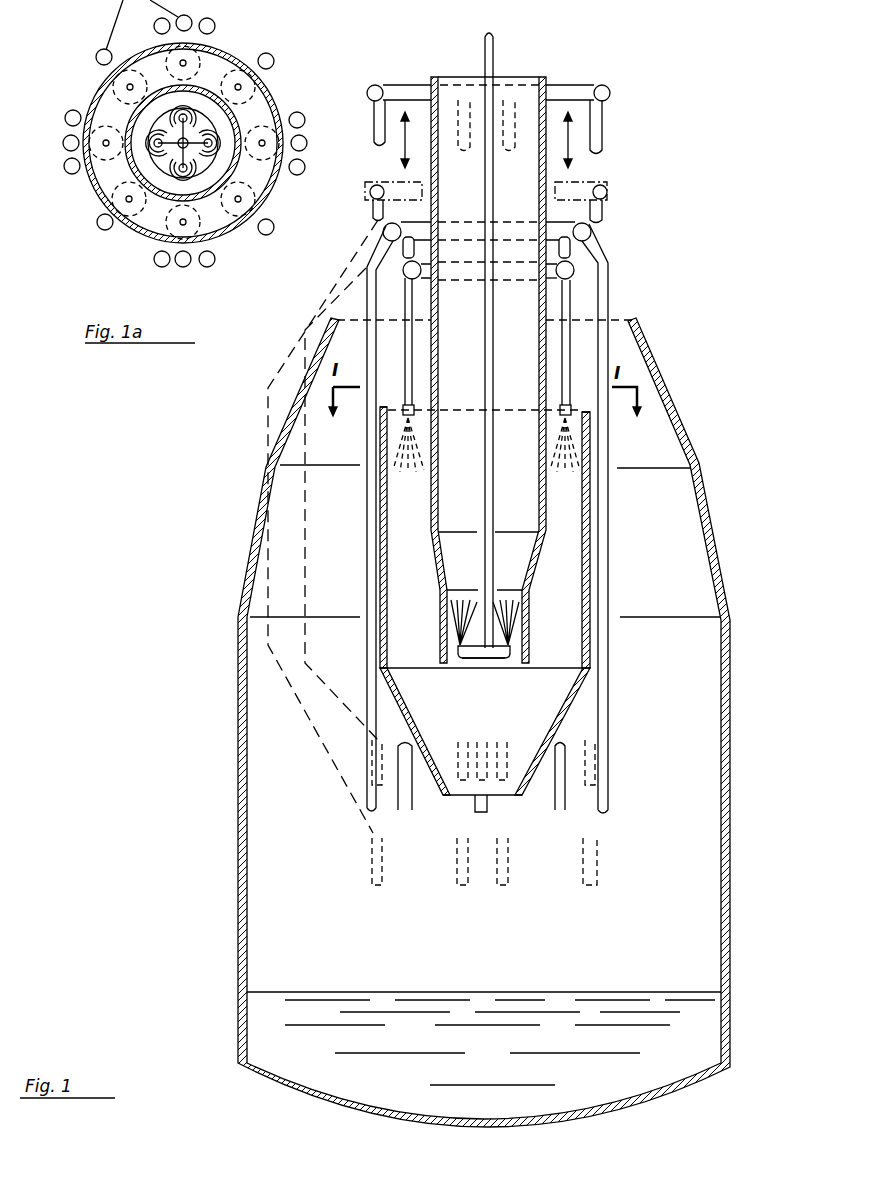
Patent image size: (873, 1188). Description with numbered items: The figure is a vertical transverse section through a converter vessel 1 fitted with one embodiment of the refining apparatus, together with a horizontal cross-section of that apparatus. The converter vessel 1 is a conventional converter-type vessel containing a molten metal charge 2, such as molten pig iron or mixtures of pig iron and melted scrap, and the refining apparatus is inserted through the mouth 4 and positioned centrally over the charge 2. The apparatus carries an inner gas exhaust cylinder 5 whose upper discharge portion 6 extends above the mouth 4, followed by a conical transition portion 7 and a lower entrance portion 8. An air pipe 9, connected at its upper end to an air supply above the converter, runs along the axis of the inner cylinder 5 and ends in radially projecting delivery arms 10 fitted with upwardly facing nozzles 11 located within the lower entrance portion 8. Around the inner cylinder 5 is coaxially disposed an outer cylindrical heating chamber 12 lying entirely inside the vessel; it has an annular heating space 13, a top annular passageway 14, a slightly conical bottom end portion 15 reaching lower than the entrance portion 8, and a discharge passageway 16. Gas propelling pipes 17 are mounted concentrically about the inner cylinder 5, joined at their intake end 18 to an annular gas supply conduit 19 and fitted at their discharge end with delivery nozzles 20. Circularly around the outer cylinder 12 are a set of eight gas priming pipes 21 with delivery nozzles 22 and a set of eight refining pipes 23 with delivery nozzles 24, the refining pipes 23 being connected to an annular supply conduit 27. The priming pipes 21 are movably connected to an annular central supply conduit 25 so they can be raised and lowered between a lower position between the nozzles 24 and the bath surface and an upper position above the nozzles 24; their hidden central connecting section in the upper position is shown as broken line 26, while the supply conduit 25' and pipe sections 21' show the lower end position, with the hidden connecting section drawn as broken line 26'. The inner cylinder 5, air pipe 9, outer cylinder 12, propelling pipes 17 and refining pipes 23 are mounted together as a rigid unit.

In FIG. 1, the converter vessel 1 is at (735, 672).
In FIG. 1, the molten metal charge 2 is at (610, 1038).
In FIG. 1, the mouth 4 is at (622, 318).
In FIG. 1, the inner gas exhaust cylinder 5 is at (537, 500).
In FIG. 1, the upper discharge portion 6 is at (512, 73).
In FIG. 1, the conical transition portion 7 is at (527, 560).
In FIG. 1, the lower entrance portion 8 is at (530, 620).
In FIG. 1, the air pipe 9 is at (494, 185).
In FIG. 1a, the air pipe 9 is at (130, 166).
In FIG. 1, the delivery arms 10 is at (497, 659).
In FIG. 1a, the delivery arms 10 is at (130, 166).
In FIG. 1, the nozzles 11 is at (512, 650).
In FIG. 1a, the nozzles 11 is at (190, 168).
In FIG. 1, the outer cylindrical heating chamber 12 is at (590, 560).
In FIG. 1, the annular heating space 13 is at (555, 507).
In FIG. 1, the top annular passageway 14 is at (405, 407).
In FIG. 1, the conical bottom end portion 15 is at (563, 715).
In FIG. 1, the discharge passageway 16 is at (502, 797).
In FIG. 1, the gas propelling pipes 17 is at (570, 348).
In FIG. 1a, the gas propelling pipes 17 is at (182, 225).
In FIG. 1, the intake end 18 is at (568, 285).
In FIG. 1, the annular gas supply conduit 19 is at (515, 278).
In FIG. 1, the delivery nozzles 20 is at (590, 418).
In FIG. 1, the gas priming pipes 21 is at (563, 442).
In FIG. 1a, the gas priming pipes 21 is at (176, 133).
In FIG. 1, the priming pipes in lower end position 21' is at (485, 535).
In FIG. 1, the delivery nozzles 22 is at (615, 810).
In FIG. 1, the refining pipes 23 is at (790, 602).
In FIG. 1a, the refining pipes 23 is at (292, 245).
In FIG. 1, the delivery nozzles 24 is at (588, 820).
In FIG. 1, the annular central supply conduit 25 is at (637, 62).
In FIG. 1, the annular supply conduit in lower end position 25' is at (510, 172).
In FIG. 1, the broken line 26 is at (278, 504).
In FIG. 1, the broken line 26' is at (279, 526).
In FIG. 1, the annular supply conduit 27 is at (470, 228).